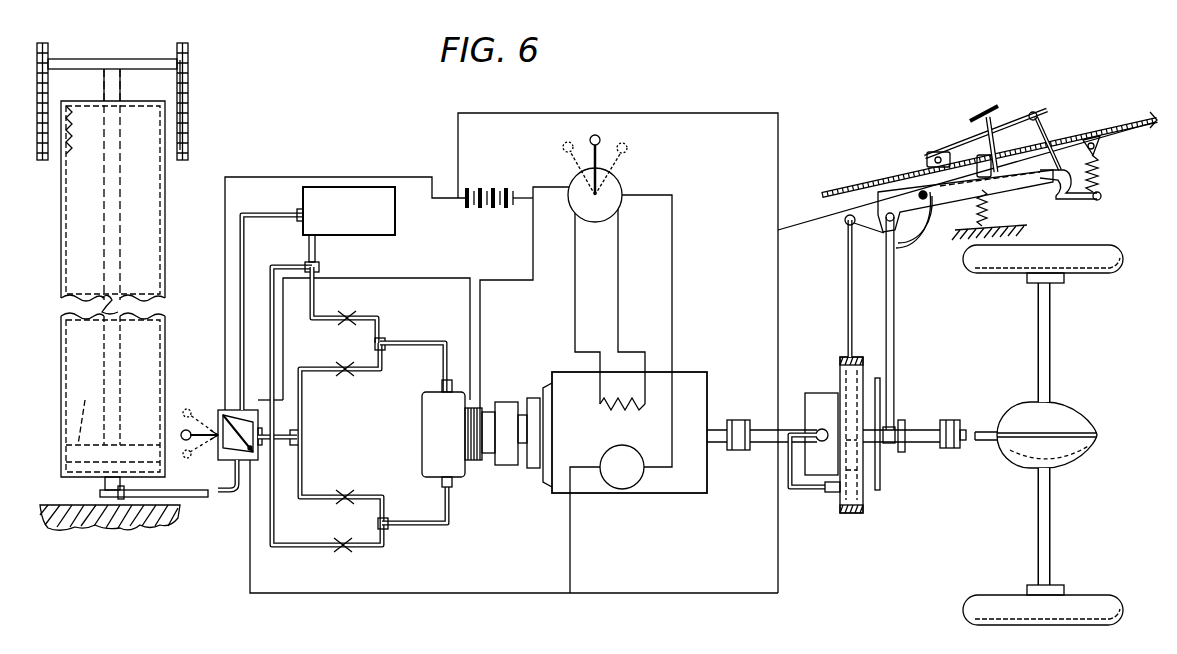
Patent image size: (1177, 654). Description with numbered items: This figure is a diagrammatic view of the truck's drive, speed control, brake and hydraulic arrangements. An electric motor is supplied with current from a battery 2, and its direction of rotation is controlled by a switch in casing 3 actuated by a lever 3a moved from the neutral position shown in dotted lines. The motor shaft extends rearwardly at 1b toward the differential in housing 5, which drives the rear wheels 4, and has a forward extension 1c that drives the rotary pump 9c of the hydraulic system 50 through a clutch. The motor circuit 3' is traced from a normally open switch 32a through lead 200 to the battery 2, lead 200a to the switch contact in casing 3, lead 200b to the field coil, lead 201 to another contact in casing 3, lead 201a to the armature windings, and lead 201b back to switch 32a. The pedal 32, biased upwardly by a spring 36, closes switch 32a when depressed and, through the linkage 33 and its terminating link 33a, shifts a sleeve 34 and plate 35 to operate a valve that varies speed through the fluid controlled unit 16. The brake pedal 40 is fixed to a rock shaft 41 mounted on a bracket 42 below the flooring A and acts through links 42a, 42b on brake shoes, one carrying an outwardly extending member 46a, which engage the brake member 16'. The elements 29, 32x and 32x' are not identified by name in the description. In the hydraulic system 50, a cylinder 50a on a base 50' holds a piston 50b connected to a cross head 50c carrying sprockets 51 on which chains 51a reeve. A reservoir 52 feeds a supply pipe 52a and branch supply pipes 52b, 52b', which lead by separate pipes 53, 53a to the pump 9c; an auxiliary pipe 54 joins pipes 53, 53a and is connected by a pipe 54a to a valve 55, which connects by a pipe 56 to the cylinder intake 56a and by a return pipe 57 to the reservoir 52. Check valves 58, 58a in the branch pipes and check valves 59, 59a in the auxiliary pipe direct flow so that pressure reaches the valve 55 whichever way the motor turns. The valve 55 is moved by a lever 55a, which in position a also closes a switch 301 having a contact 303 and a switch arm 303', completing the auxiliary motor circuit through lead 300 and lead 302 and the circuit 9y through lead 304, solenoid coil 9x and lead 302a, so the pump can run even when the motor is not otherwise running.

The battery 2 is at (489, 186).
The switch casing 3 is at (607, 189).
The lever 3a is at (601, 140).
The motor circuit 3' is at (625, 415).
The rearward motor shaft extension 1b is at (716, 432).
The forward shaft extension 1c is at (522, 445).
The rear wheels 4 is at (1090, 273).
The differential housing 5 is at (1020, 455).
The pump 9c is at (428, 462).
The solenoid coil 9x is at (475, 462).
The solenoid circuit 9y is at (441, 319).
The fluid controlled unit 16 is at (814, 417).
The brake member 16' is at (826, 442).
The coupling 29 is at (950, 418).
The pedal 32 is at (1038, 112).
The normally open switch 32a is at (950, 135).
The lever arc 32x is at (895, 230).
The lever rod 32x' is at (968, 189).
The linkage 33 is at (905, 328).
The terminating link 33a is at (891, 340).
The sleeve 34 is at (900, 452).
The plate 35 is at (882, 482).
The spring 36 is at (1100, 170).
The brake pedal 40 is at (987, 106).
The rock shaft 41 is at (926, 199).
The bracket 42 is at (905, 185).
The link 42a is at (898, 243).
The second link 42b is at (848, 296).
The outwardly extending member 46a is at (988, 214).
The hydraulic system 50 is at (410, 433).
The cylinder 50a is at (165, 335).
The piston 50b is at (85, 425).
The cross head 50c is at (125, 58).
The base 50' is at (110, 538).
The sprockets 51 is at (188, 58).
The chains 51a is at (188, 100).
The reservoir 52 is at (303, 194).
The supply pipe 52a is at (316, 258).
The branch supply pipe 52b is at (348, 308).
The branch supply pipe 52b' is at (296, 563).
The pipe 53 is at (412, 343).
The pipe 53a is at (430, 526).
The auxiliary pipe 54 is at (258, 420).
The pipe 54a is at (280, 437).
The valve 55 is at (218, 492).
The lever 55a is at (185, 430).
The pipe 56 is at (78, 497).
The cylinder intake 56a is at (100, 497).
The fluid return pipe 57 is at (258, 214).
The check valve 58 is at (350, 326).
The check valve 58a is at (345, 551).
The check valve 59 is at (348, 375).
The check valve 59a is at (342, 503).
The lead 200 is at (778, 147).
The lead 200a is at (548, 185).
The lead 200b is at (575, 338).
The lead 201 is at (618, 312).
The lead 201a is at (672, 312).
The lead 201b is at (570, 538).
The lead 300 is at (290, 593).
The electric switch 301 is at (222, 420).
The lead 302 is at (225, 298).
The lead 302a is at (515, 282).
The contact 303 is at (327, 406).
The switch arm 303' is at (210, 389).
The lead 304 is at (425, 272).
The flooring A is at (855, 192).